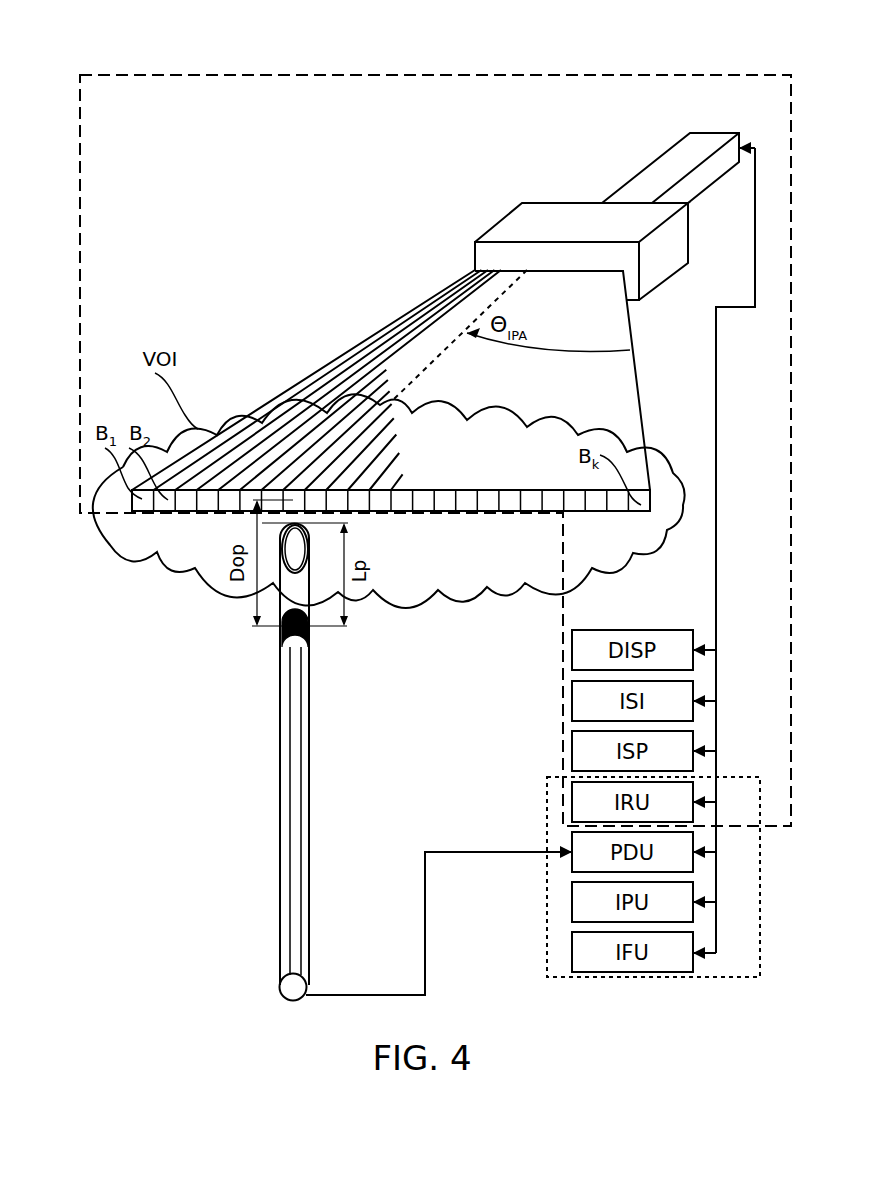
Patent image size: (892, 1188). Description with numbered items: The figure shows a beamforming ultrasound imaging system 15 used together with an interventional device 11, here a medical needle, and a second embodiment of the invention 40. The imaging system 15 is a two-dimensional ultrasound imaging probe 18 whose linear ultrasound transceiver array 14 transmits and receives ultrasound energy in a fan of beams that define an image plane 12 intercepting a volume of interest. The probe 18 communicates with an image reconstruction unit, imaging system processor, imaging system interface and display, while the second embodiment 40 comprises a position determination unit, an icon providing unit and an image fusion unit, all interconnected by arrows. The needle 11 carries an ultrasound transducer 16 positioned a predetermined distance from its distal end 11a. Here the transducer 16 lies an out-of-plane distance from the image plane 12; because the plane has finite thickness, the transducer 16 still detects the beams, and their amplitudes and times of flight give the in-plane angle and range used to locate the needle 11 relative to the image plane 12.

The beamforming ultrasound imaging system 15 is at (204, 76).
The 2D ultrasound imaging probe 18 is at (573, 215).
The linear ultrasound transceiver array 14 is at (531, 271).
The image plane 12 is at (633, 363).
The interventional device 11 is at (282, 753).
The distal end 11a is at (262, 523).
The ultrasound transducer 16 is at (309, 633).
The second embodiment of the invention 40 is at (547, 880).